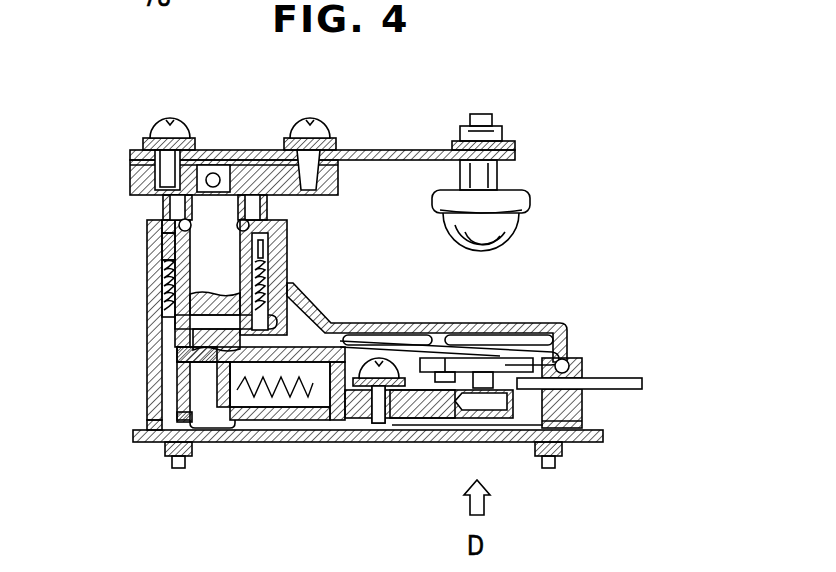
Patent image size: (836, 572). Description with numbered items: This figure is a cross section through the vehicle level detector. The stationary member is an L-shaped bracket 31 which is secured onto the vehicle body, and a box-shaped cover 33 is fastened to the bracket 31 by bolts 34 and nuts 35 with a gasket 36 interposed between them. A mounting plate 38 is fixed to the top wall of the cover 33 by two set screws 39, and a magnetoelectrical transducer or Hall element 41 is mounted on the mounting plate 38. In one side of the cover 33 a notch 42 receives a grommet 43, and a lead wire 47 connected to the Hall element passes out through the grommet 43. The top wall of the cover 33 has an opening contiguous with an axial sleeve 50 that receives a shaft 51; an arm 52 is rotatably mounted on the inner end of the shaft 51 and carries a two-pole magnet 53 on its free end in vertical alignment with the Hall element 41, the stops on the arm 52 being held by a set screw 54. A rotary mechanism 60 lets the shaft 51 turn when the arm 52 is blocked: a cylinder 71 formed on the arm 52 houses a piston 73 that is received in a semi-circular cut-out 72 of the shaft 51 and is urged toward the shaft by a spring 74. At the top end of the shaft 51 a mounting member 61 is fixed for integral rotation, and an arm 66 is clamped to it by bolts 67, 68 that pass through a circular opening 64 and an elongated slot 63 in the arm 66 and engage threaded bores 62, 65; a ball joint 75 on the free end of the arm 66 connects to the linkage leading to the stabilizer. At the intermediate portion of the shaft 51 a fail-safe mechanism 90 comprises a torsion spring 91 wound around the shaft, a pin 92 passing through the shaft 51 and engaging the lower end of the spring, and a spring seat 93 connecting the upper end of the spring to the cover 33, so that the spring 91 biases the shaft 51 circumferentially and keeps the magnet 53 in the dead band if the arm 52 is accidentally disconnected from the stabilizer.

The bracket 31 is at (385, 442).
The cover 33 is at (540, 323).
The bolts 34 is at (175, 468).
The nuts 35 is at (165, 449).
The gasket 36 is at (148, 425).
The mounting plate 38 is at (418, 366).
The set screws 39 is at (446, 358).
The Hall element 41 is at (484, 370).
The notch 42 is at (572, 357).
The grommet 43 is at (585, 372).
The lead wire 47 is at (642, 384).
The axial sleeve 50 is at (262, 283).
The shaft 51 is at (163, 262).
The arm 52 is at (433, 420).
The magnet 53 is at (485, 410).
The set screw 54 is at (378, 358).
The rotary mechanism 60 is at (283, 442).
The mounting member 61 is at (130, 180).
The threaded bore 62 is at (162, 197).
The elongated slot 63 is at (332, 150).
The circular opening 64 is at (200, 150).
The threaded bore 65 is at (318, 192).
The arm 66 is at (402, 150).
The bolt 67 is at (170, 118).
The bolt 68 is at (310, 118).
The cylinder 71 is at (300, 420).
The semi-circular cut-out 72 is at (205, 400).
The piston 73 is at (232, 388).
The spring 74 is at (325, 395).
The ball joint 75 is at (498, 225).
The fail-safe mechanism 90 is at (270, 243).
The torsion spring 91 is at (163, 306).
The pin 92 is at (178, 322).
The spring seat 93 is at (163, 245).